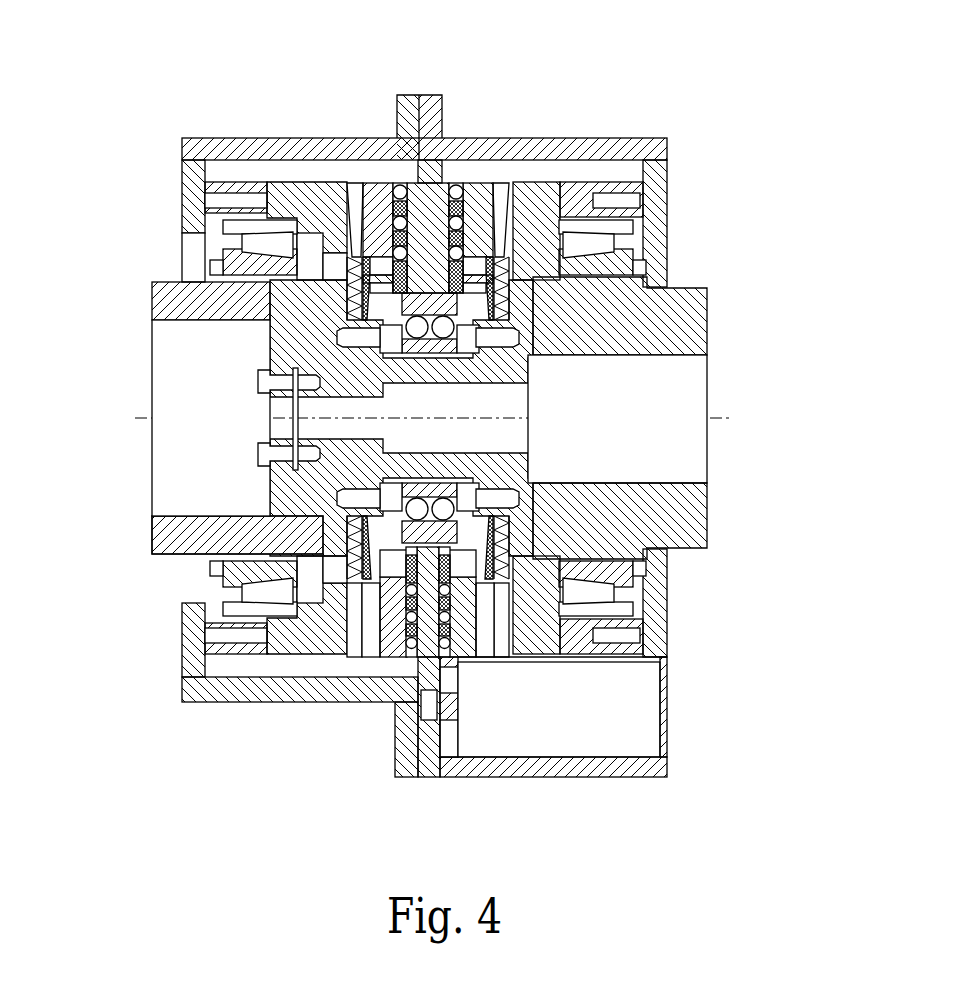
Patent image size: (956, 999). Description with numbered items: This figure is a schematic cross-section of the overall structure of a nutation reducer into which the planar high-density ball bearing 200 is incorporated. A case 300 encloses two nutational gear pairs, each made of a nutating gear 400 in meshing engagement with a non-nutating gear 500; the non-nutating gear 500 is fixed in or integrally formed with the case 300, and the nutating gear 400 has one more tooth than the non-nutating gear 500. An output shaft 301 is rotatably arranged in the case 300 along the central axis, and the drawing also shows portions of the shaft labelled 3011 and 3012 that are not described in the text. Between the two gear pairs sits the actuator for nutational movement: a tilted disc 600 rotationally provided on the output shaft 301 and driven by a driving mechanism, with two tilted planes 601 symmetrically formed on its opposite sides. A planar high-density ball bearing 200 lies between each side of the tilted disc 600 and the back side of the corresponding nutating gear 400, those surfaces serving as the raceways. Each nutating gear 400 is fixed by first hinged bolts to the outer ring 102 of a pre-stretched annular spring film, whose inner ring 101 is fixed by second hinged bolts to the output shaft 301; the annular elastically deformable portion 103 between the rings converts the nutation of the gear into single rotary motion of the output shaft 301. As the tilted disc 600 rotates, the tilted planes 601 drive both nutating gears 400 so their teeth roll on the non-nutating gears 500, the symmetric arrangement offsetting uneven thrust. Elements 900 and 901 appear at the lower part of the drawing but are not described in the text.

The non-nutating gear 500 is at (182, 139).
The case 300 is at (284, 200).
The nutating gear 400 is at (363, 207).
The planar high-density ball bearing 200 is at (388, 185).
The tilted disc 600 is at (425, 210).
The tilted plane 601 is at (458, 180).
The outer ring 102 is at (287, 237).
The annular elastically deformable portion 103 is at (345, 300).
The inner ring 101 is at (355, 348).
The left flange 3011 is at (227, 523).
The output shaft 301 is at (677, 412).
The shaft bore wall 3012 is at (678, 513).
The housing box 900 is at (532, 717).
The output shaft 901 is at (430, 777).